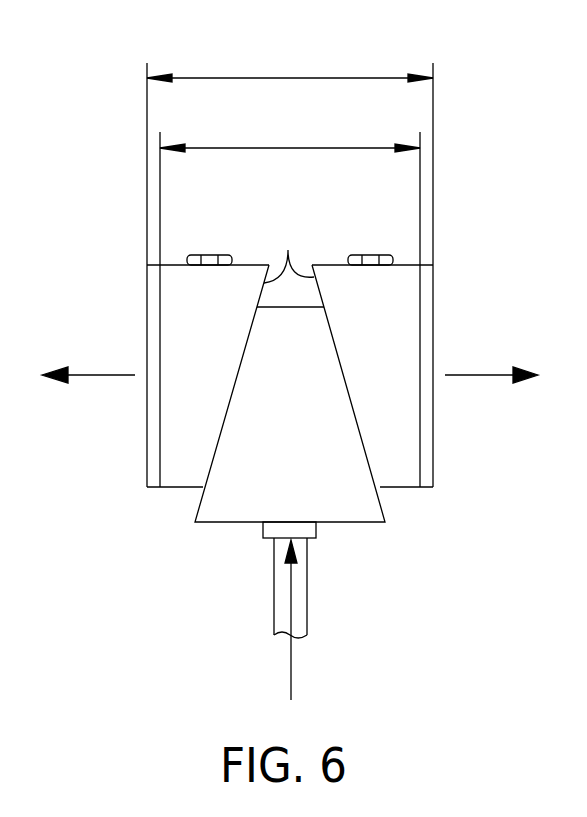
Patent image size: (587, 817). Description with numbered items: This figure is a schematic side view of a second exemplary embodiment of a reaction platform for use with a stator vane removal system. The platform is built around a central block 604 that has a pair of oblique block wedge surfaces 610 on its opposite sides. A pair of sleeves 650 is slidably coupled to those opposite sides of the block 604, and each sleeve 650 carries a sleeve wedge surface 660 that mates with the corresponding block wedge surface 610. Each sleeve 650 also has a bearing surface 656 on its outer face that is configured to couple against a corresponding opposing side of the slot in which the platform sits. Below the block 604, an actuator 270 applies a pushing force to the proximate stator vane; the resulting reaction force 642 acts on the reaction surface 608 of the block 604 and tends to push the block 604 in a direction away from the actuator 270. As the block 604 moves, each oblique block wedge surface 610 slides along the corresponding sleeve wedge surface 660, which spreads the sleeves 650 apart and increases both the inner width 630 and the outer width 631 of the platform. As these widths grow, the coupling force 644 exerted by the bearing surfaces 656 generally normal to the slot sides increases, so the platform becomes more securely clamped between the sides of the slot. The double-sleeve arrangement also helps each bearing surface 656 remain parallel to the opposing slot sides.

The outer width 631 is at (210, 78).
The inner width 630 is at (258, 146).
The sleeve wedge surface 660 is at (288, 250).
The bearing surface 656 is at (160, 305).
The coupling force 644 is at (108, 378).
The sleeve 650 is at (185, 447).
The block wedge surface 610 is at (200, 512).
The block 604 is at (355, 507).
The reaction surface 608 is at (238, 524).
The actuator 270 is at (307, 610).
The reaction force 642 is at (291, 657).